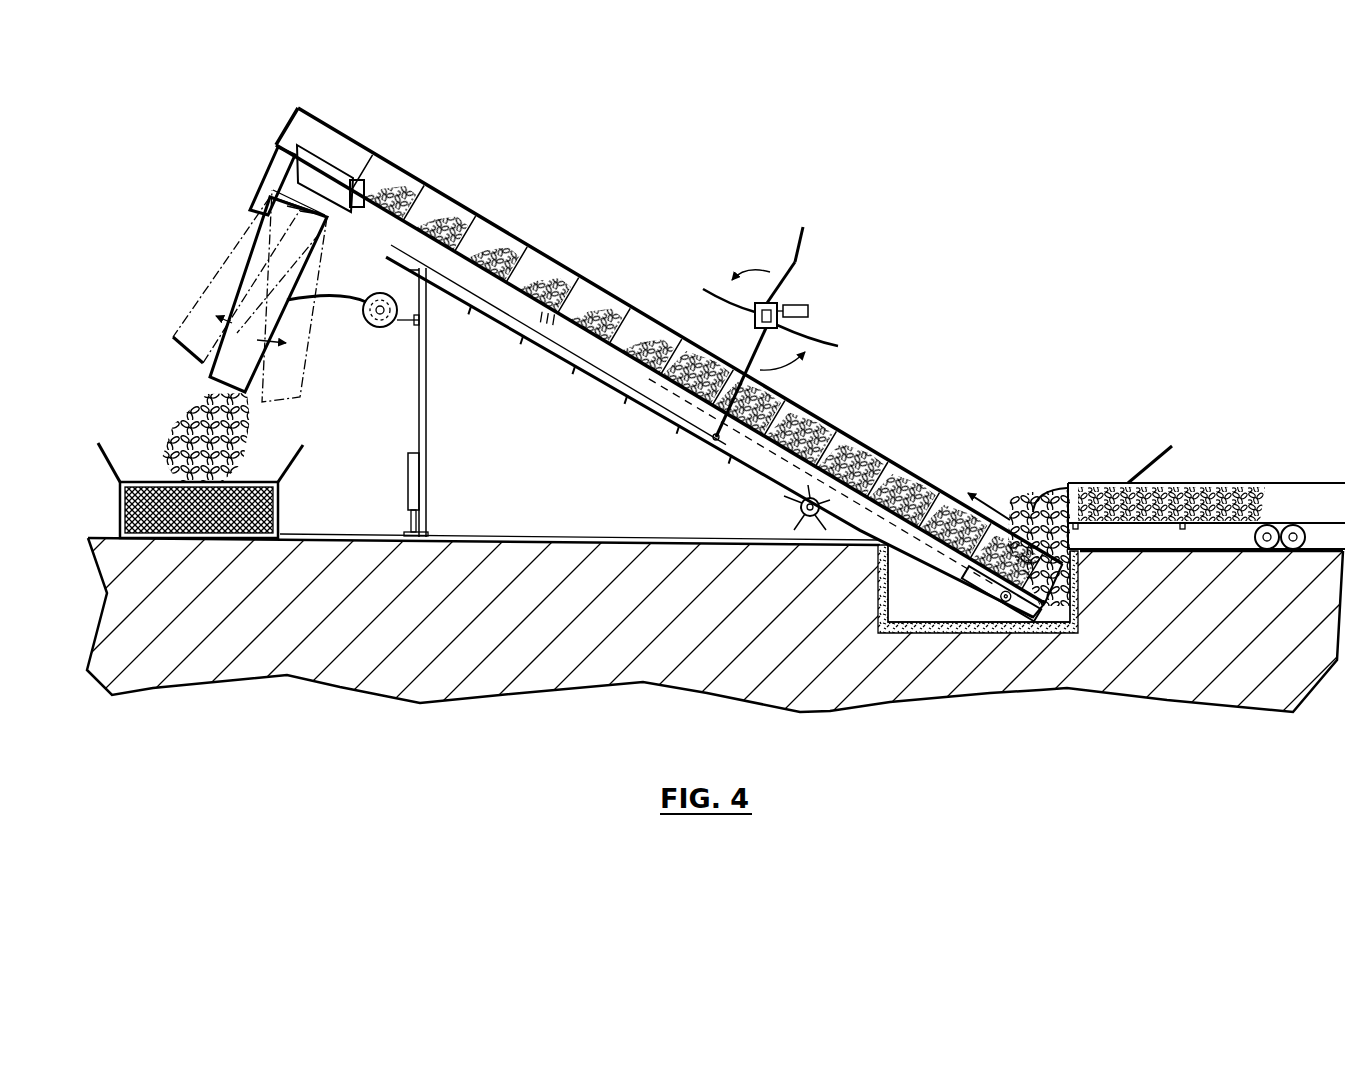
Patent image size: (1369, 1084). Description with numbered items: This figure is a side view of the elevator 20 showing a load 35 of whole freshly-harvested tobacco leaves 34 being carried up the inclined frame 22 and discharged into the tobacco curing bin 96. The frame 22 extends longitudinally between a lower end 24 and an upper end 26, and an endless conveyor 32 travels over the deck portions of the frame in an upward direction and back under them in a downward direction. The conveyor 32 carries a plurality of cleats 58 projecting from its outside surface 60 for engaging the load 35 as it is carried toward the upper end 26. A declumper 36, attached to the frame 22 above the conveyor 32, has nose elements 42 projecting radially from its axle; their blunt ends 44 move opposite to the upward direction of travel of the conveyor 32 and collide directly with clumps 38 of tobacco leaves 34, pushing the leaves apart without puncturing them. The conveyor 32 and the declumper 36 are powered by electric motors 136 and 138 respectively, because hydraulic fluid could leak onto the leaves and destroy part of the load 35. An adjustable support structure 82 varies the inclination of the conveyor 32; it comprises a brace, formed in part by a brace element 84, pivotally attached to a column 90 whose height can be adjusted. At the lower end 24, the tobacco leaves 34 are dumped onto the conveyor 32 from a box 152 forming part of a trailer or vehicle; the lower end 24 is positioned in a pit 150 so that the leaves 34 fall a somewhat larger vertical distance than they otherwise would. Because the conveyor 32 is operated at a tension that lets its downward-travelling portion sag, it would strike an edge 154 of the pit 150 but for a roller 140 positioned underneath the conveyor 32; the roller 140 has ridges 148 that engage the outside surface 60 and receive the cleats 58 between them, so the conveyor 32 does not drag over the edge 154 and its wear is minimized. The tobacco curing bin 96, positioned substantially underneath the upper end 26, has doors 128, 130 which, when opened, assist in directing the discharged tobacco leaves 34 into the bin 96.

The elevator 20 is at (524, 229).
The inclined frame 22 is at (727, 452).
The lower end 24 is at (990, 603).
The upper end 26 is at (247, 228).
The endless conveyor 32 is at (590, 374).
The tobacco leaves 34 is at (556, 286).
The load 35 is at (900, 458).
The declumper 36 is at (806, 304).
The clumps 38 is at (826, 427).
The nose elements 42 is at (800, 263).
The blunt ends 44 is at (811, 238).
The cleats 58 is at (700, 420).
The outside surface 60 is at (632, 392).
The adjustable support structure 82 is at (432, 479).
The brace element 84 is at (641, 536).
The column 90 is at (428, 397).
The tobacco curing bin 96 is at (281, 514).
The door 128 is at (306, 457).
The door 130 is at (99, 462).
The electric motor 136 is at (342, 170).
The electric motor 138 is at (809, 318).
The roller 140 is at (798, 512).
The ridges 148 is at (790, 500).
The pit 150 is at (886, 603).
The box 152 is at (1330, 482).
The edge 154 is at (978, 589).